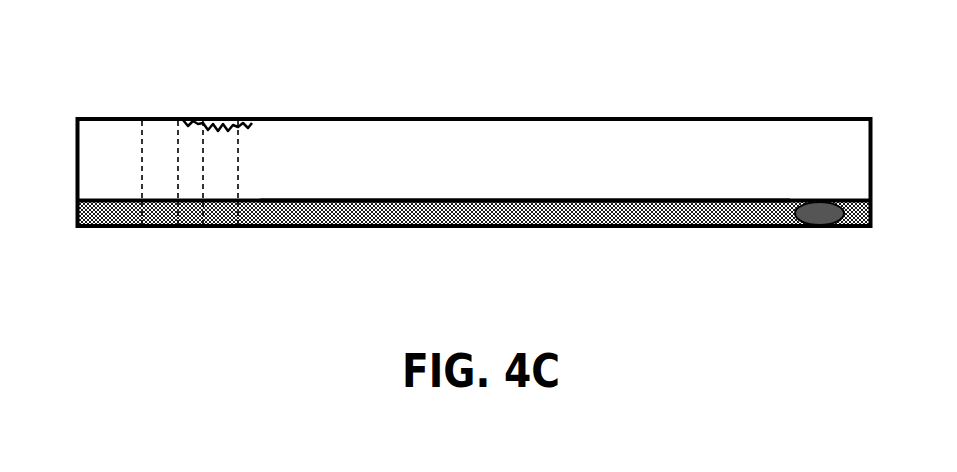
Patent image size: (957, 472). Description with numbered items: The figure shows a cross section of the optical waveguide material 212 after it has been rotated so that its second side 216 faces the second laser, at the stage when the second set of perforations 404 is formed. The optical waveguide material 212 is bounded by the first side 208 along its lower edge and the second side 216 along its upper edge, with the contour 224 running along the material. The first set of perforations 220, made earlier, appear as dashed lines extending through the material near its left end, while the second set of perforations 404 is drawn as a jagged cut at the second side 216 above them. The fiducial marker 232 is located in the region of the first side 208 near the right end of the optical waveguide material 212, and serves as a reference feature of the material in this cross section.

The optical waveguide material 212 is at (503, 182).
The second side 216 is at (632, 118).
The contour 224 is at (453, 198).
The first side 208 is at (640, 228).
The first set of perforations 220 is at (165, 228).
The second set of perforations 404 is at (220, 120).
The fiducial marker 232 is at (818, 227).